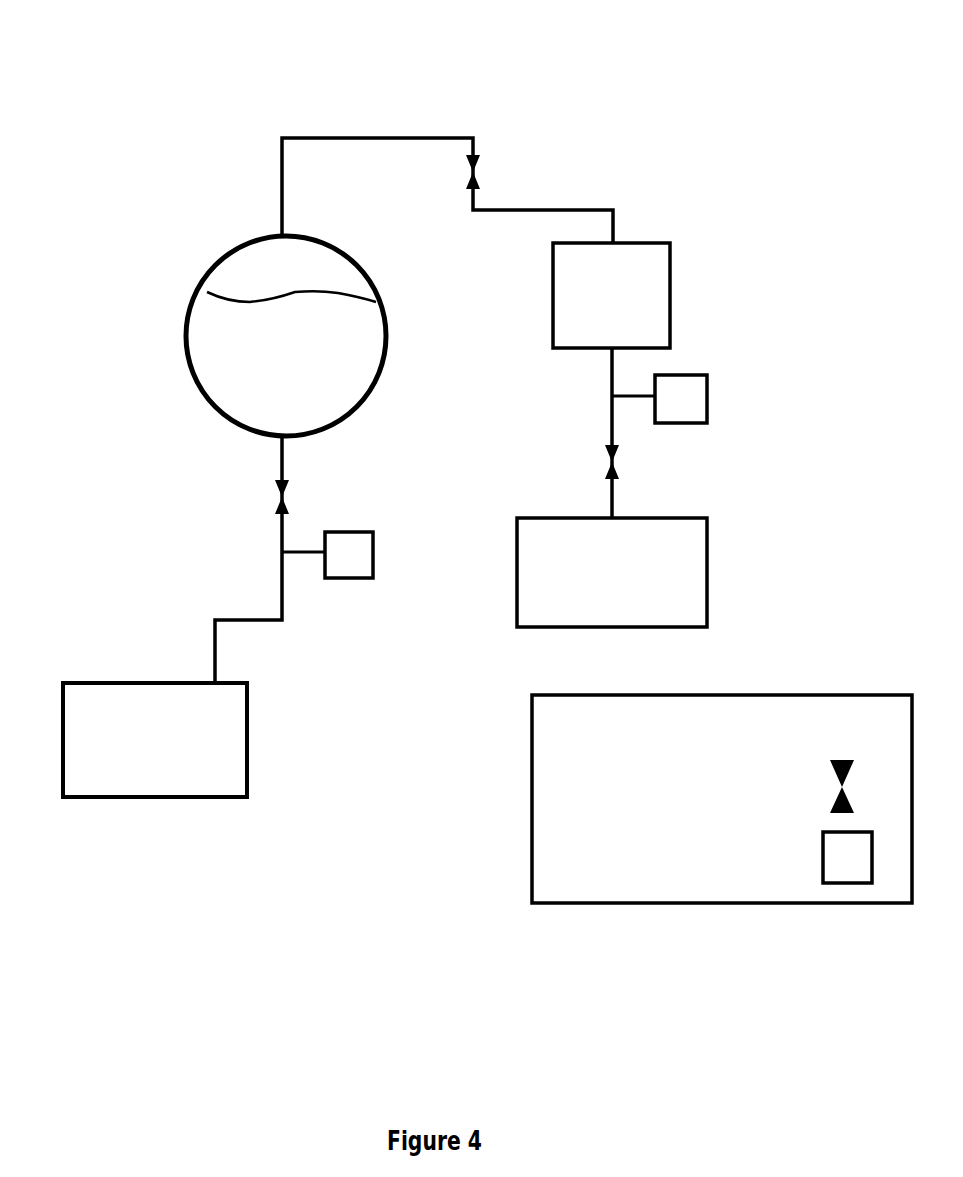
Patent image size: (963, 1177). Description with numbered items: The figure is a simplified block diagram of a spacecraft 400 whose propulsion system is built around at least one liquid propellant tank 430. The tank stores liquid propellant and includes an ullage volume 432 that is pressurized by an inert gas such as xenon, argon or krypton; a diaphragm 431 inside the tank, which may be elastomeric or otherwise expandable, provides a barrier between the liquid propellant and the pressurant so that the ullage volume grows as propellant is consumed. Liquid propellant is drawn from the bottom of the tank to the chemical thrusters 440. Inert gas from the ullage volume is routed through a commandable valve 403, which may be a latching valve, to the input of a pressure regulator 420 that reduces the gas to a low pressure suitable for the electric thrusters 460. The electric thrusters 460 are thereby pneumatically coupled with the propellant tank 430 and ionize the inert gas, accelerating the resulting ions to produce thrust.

The spacecraft 400 is at (105, 20).
The commandable valve 403 is at (478, 172).
The pressure regulator 420 is at (671, 308).
The liquid propellant tank 430 is at (372, 393).
The diaphragm 431 is at (242, 300).
The ullage volume 432 is at (316, 270).
The chemical thrusters 440 is at (250, 743).
The electric thrusters 460 is at (710, 578).